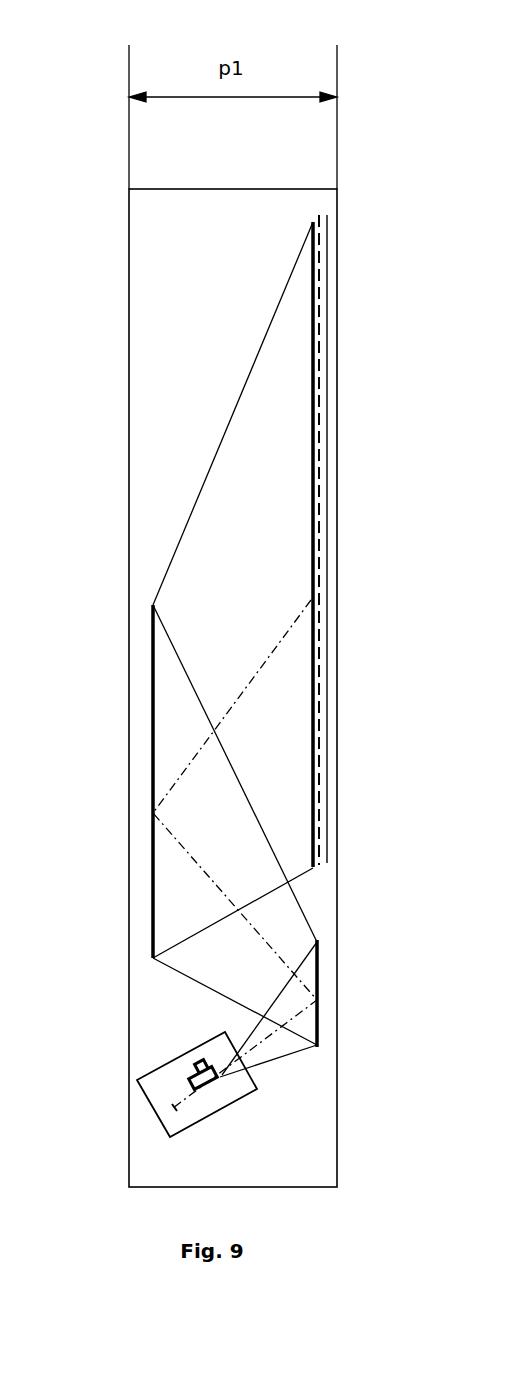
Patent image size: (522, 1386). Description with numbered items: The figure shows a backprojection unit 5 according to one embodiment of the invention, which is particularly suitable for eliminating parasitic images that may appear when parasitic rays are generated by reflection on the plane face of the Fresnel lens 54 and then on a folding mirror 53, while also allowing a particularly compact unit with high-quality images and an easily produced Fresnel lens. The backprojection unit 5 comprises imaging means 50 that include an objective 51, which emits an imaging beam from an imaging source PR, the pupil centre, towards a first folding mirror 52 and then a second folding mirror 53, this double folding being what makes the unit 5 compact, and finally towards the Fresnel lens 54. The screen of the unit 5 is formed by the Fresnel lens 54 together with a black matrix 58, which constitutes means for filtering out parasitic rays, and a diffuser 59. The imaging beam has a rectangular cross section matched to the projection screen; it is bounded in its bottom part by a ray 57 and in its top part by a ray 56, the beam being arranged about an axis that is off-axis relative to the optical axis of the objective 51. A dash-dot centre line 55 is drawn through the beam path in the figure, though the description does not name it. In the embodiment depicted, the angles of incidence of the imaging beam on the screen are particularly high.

The backprojection unit 5 is at (337, 307).
The imaging means 50 is at (153, 1115).
The objective 51 is at (230, 1093).
The first folding mirror 52 is at (317, 1020).
The second folding mirror 53 is at (153, 900).
The Fresnel lens 54 is at (313, 267).
The optical axis 55 is at (232, 705).
The ray 56 is at (190, 515).
The ray 57 is at (303, 877).
The black matrix 58 is at (320, 480).
The diffuser 59 is at (328, 538).
The imaging source PR is at (196, 1066).